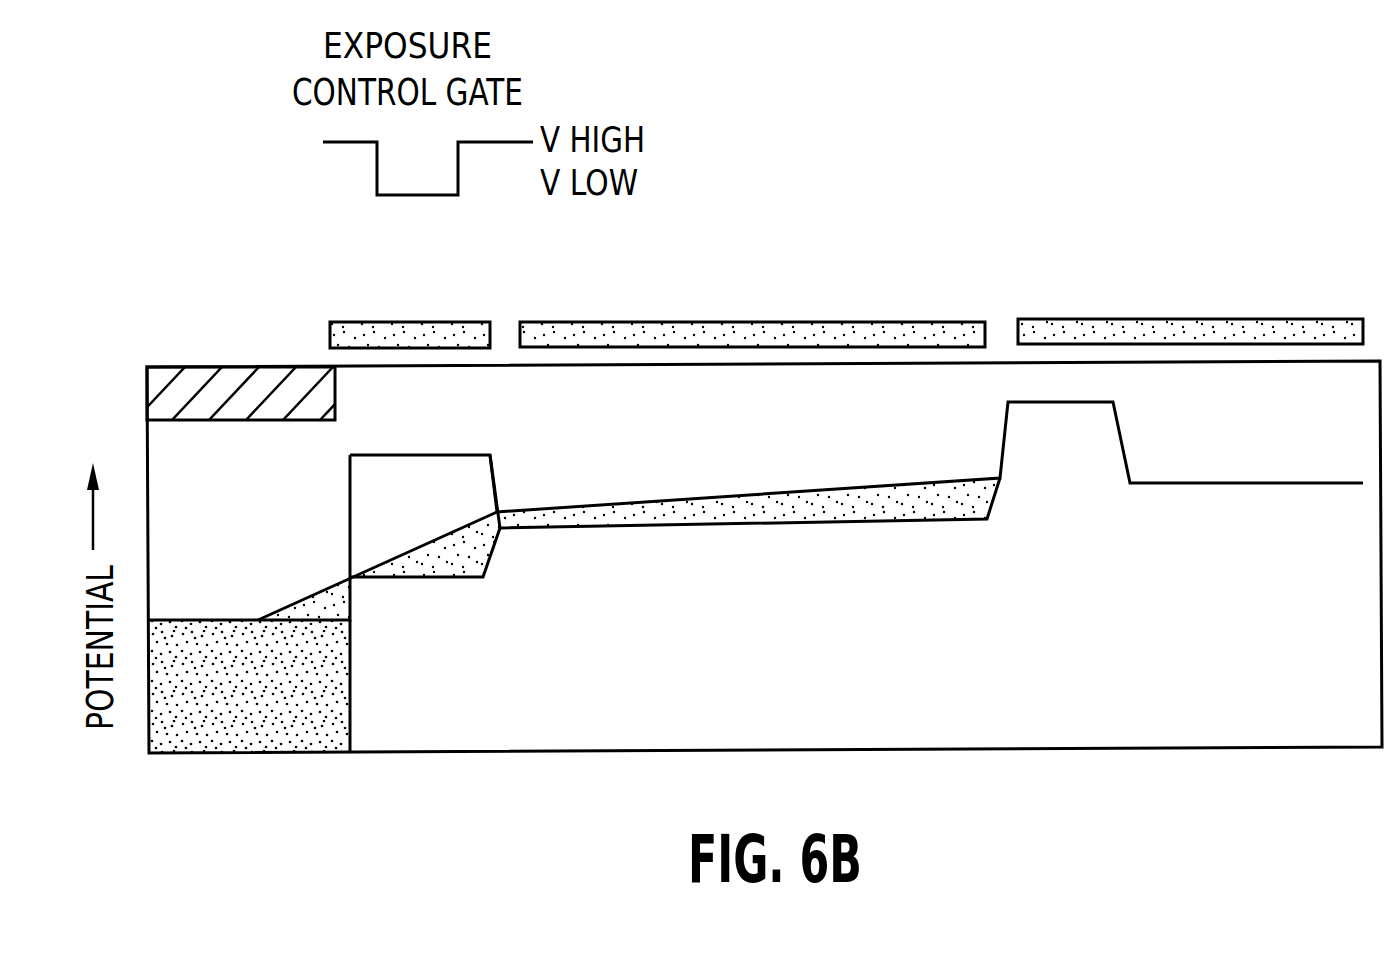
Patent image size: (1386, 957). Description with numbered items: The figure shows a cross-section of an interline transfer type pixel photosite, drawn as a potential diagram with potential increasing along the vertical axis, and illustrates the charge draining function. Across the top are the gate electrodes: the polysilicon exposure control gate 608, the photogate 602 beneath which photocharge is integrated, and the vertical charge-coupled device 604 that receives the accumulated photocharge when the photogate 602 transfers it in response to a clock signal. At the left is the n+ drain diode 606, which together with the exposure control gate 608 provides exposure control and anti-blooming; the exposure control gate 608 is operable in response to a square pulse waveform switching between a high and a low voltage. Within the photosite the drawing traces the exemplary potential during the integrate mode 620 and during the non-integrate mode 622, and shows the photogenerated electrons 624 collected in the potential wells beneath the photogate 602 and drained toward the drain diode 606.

The photogate 602 is at (826, 320).
The vertical charge-coupled device 604 is at (1225, 318).
The n+ drain diode 606 is at (270, 366).
The polysilicon exposure control gate 608 is at (437, 322).
The integrate mode potential 620 is at (497, 477).
The non-integrate mode potential 622 is at (427, 578).
The photogenerated electrons 624 is at (910, 522).